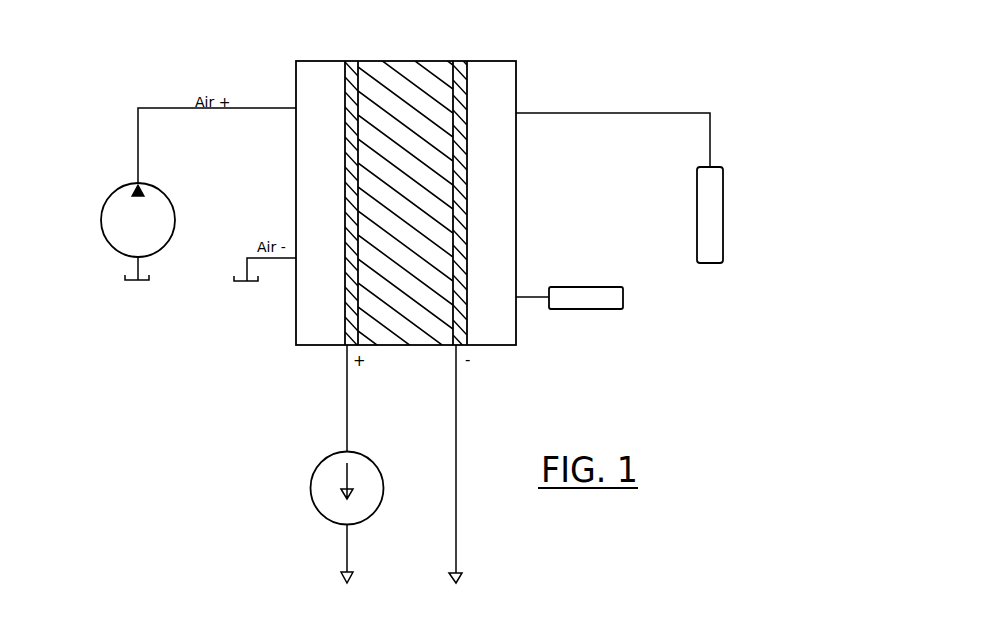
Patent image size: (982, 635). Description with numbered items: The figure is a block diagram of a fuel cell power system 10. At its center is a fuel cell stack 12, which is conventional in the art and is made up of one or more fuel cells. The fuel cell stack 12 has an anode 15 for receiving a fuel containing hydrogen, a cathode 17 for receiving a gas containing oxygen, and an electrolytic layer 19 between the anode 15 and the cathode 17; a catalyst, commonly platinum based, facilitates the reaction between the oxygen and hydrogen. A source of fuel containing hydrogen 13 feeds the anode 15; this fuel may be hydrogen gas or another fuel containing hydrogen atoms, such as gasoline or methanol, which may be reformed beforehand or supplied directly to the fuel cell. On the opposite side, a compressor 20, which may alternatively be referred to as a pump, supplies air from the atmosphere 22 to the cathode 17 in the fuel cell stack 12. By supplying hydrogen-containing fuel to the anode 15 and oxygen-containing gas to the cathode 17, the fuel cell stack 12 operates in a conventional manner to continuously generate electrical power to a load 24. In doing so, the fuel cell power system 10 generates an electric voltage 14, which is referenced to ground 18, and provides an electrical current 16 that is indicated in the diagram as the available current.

The fuel cell power system 10 is at (266, 395).
The fuel cell stack 12 is at (493, 60).
The source of fuel containing hydrogen 13 is at (723, 210).
The electric voltage 14 is at (348, 403).
The anode 15 is at (467, 206).
The electrical current 16 is at (607, 309).
The cathode 17 is at (345, 183).
The ground 18 is at (341, 577).
The electrolytic layer 19 is at (406, 347).
The compressor 20 is at (108, 243).
The atmosphere 22 is at (125, 280).
The load 24 is at (311, 503).